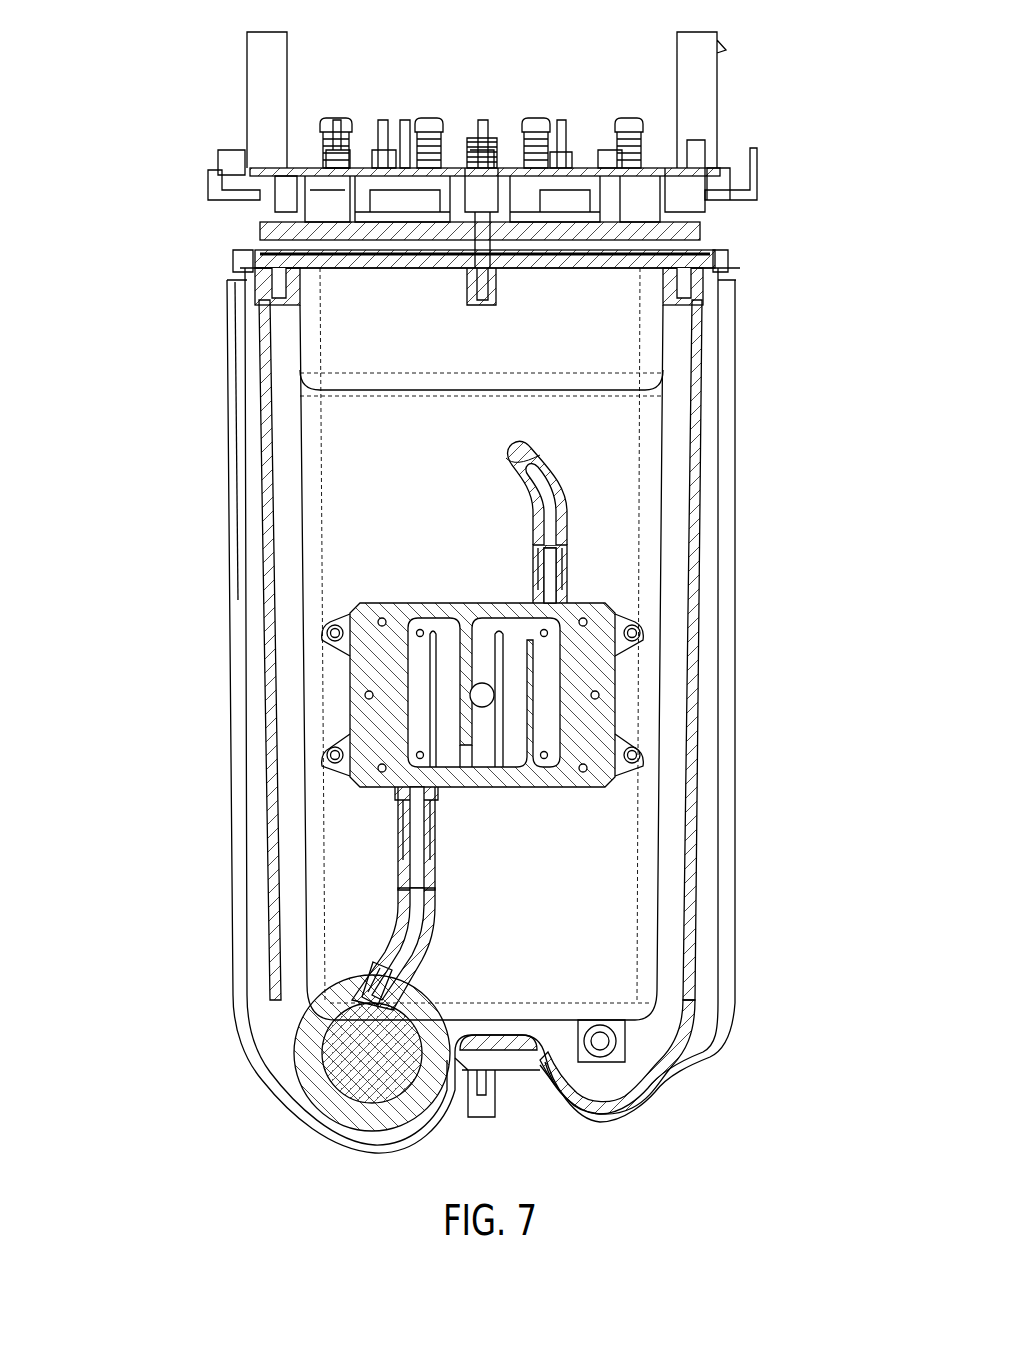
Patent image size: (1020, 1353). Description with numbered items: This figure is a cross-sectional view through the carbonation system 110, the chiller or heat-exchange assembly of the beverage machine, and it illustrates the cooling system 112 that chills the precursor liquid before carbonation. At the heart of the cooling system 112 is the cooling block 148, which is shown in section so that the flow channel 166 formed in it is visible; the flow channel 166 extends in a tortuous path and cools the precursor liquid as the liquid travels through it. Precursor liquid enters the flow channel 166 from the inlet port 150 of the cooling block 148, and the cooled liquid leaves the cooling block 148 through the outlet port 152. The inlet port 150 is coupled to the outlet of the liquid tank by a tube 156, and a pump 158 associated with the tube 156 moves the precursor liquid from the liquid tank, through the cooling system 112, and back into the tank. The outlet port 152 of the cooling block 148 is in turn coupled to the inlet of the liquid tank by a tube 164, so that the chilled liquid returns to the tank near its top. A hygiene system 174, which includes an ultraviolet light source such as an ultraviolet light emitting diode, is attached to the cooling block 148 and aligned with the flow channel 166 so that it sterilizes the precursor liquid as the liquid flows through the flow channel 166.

The carbonation system 110 is at (164, 52).
The cooling system 112 is at (355, 575).
The cooling block 148 is at (355, 708).
The inlet port 150 is at (407, 812).
The outlet port 152 is at (568, 590).
The tube 156 is at (437, 906).
The pump 158 is at (338, 1070).
The tube 164 is at (564, 510).
The flow channel 166 is at (408, 673).
The hygiene system 174 is at (485, 707).